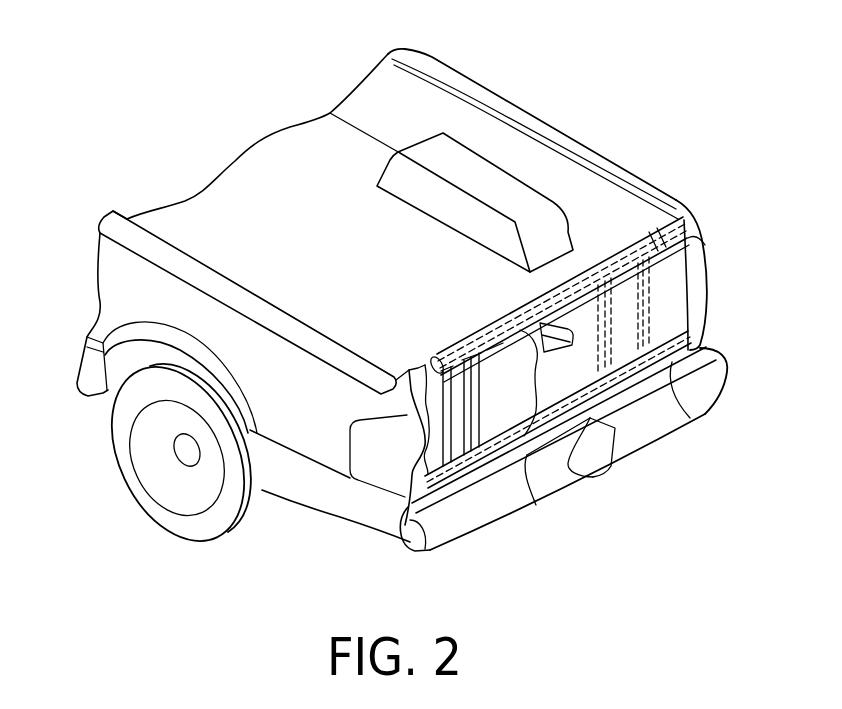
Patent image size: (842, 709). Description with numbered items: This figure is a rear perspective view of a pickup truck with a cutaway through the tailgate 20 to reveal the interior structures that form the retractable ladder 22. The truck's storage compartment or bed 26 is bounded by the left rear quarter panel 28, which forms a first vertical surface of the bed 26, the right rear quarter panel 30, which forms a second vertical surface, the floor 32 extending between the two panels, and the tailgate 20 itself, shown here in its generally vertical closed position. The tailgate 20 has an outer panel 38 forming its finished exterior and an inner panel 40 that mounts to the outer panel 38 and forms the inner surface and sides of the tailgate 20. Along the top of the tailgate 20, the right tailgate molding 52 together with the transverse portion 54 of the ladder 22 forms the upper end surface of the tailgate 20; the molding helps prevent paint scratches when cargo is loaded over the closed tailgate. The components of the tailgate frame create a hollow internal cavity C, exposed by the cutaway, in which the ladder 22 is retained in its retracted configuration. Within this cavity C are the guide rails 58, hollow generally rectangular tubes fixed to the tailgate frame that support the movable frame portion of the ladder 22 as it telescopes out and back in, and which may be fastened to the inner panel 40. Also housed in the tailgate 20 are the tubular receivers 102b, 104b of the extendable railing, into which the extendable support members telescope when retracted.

The tailgate 20 is at (704, 270).
The retractable ladder 22 is at (631, 222).
The bed 26 is at (294, 229).
The left rear quarter panel 28 is at (98, 290).
The right rear quarter panel 30 is at (440, 68).
The floor 32 is at (258, 137).
The outer panel 38 is at (673, 327).
The inner panel 40 is at (512, 512).
The right tailgate molding 52 is at (677, 218).
The transverse portion 54 is at (618, 257).
The guide rails 58 is at (478, 385).
The tubular receiver 102b is at (407, 525).
The tubular receiver 104b is at (690, 418).
The hollow internal cavity C is at (514, 422).